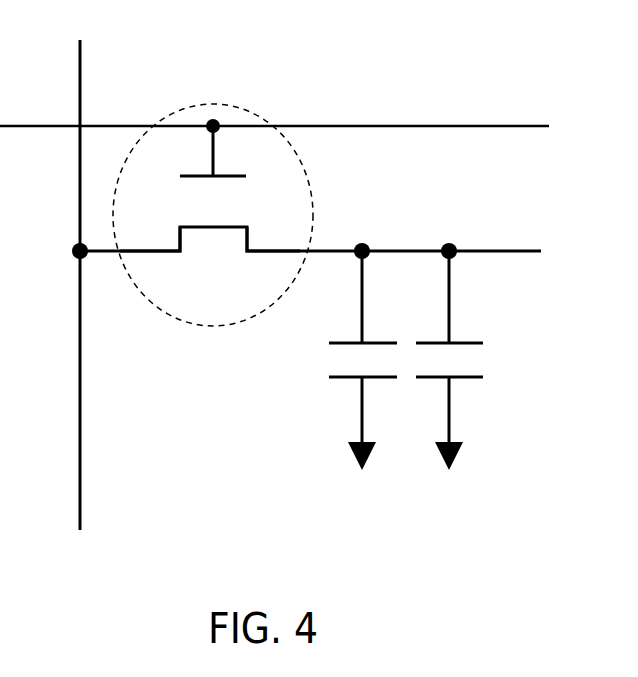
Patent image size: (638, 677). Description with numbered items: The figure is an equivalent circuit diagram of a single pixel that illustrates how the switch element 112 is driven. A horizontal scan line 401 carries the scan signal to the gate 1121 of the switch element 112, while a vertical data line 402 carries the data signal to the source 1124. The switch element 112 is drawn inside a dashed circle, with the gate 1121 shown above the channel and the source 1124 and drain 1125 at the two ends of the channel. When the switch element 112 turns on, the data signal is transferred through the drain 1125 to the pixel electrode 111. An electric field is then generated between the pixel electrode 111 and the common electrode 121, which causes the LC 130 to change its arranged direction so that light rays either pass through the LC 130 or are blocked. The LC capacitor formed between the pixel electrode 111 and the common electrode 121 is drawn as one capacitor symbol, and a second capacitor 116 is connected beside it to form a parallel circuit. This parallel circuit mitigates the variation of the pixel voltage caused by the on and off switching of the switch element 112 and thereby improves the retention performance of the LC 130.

The scan line 401 is at (274, 103).
The data line 402 is at (52, 285).
The switch element 112 is at (250, 110).
The gate 1121 is at (240, 163).
The source 1124 is at (160, 258).
The drain 1125 is at (266, 258).
The LC 130 is at (350, 360).
The pixel electrode 111 is at (350, 326).
The common electrode 121 is at (350, 395).
The capacitor 116 is at (451, 360).